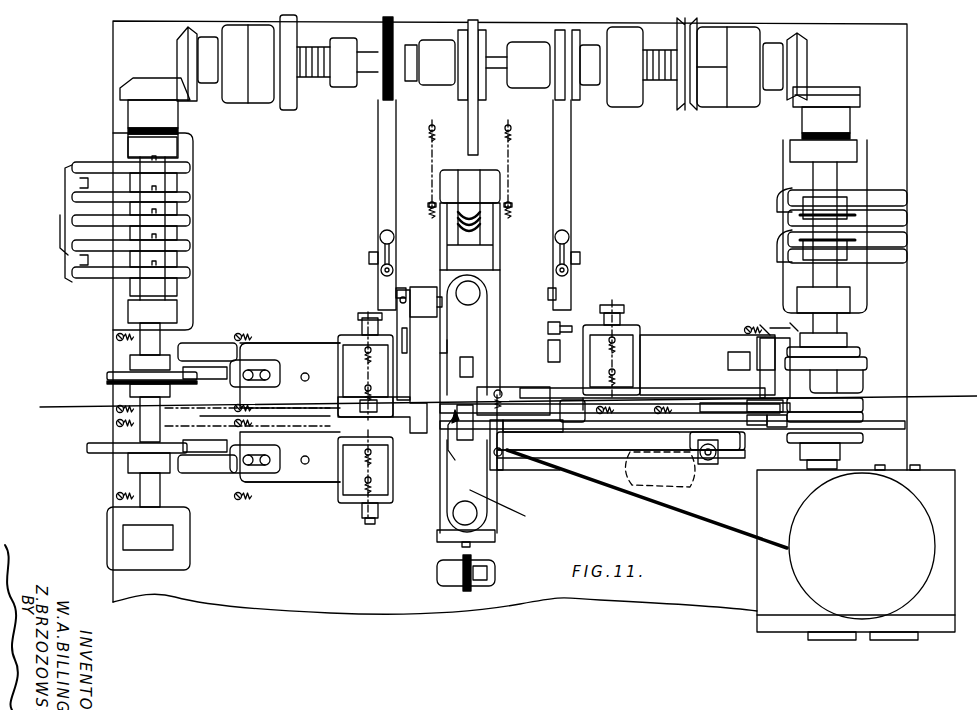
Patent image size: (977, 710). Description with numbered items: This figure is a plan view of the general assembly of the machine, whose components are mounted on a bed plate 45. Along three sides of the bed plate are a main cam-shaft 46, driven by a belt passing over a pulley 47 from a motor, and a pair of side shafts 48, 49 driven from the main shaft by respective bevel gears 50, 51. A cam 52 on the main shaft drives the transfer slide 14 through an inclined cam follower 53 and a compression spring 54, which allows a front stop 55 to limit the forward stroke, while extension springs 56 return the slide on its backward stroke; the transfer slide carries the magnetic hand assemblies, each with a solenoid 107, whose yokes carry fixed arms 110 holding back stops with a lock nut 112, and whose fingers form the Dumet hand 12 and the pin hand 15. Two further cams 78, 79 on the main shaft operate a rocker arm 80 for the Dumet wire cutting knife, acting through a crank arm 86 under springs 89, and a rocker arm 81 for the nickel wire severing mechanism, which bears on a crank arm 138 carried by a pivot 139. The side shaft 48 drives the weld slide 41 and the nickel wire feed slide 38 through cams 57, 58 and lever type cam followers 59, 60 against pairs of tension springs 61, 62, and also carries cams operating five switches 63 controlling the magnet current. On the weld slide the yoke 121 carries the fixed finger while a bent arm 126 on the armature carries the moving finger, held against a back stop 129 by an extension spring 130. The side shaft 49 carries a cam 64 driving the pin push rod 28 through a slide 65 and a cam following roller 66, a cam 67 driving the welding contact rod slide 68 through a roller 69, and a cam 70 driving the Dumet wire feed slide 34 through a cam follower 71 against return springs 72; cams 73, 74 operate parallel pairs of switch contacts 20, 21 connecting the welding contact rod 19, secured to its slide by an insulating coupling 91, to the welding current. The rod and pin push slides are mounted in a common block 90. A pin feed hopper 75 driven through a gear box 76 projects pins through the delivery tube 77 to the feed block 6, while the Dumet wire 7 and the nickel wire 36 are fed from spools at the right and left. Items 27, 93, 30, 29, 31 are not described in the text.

The bed plate 45 is at (510, 317).
The Dumet wire 7 is at (975, 396).
The bevel gear 50 is at (170, 72).
The main cam-shaft 46 is at (372, 70).
The cam 79 is at (393, 92).
The rocker arm 81 is at (380, 220).
The cam 52 is at (478, 108).
The cam 78 is at (565, 100).
The rocker arm 80 is at (572, 222).
The pulley 47 is at (688, 110).
The bevel gear 51 is at (813, 82).
The side shaft 49 is at (810, 277).
The switch contacts 20 is at (912, 192).
The switch contacts 21 is at (912, 233).
The cam 74 is at (798, 215).
The cam 73 is at (798, 240).
The return springs 72 is at (758, 325).
The cam 70 is at (865, 363).
The cam 67 is at (865, 406).
The cam 64 is at (907, 428).
The pin feed hopper 75 is at (856, 552).
The gear box 76 is at (925, 505).
The delivery tube 77 is at (634, 490).
The belt line 27 is at (642, 498).
The side shaft 48 is at (150, 342).
The switches 63 is at (63, 288).
The nickel wire 36 is at (88, 417).
The cam 58 is at (112, 381).
The cam 57 is at (98, 445).
The cam follower 59 is at (218, 495).
The cam follower 60 is at (240, 340).
The tension springs 62 is at (269, 384).
The tension springs 61 is at (252, 512).
The weld slide 41 is at (405, 490).
The nickel wire feed slide 38 is at (288, 342).
The yoke 121 is at (630, 340).
The extension spring 130 is at (625, 332).
The solenoid 107 is at (600, 318).
The back stop 129 is at (365, 520).
The bent arm 126 is at (405, 415).
The pivot 139 is at (410, 340).
The crank arm 138 is at (406, 350).
The extension springs 56 is at (512, 147).
The cam follower 53 is at (470, 186).
The compression spring 54 is at (482, 222).
The transfer slide 14 is at (498, 290).
The fixed arms 110 is at (525, 516).
The lock nut 112 is at (478, 518).
The Dumet hand 12 is at (462, 386).
The pin hand 15 is at (456, 425).
The front stop 55 is at (496, 575).
The springs 89 is at (548, 328).
The crank arm 86 is at (548, 352).
The feed block 6 is at (513, 428).
The rod 93 is at (680, 390).
The Dumet wire feed slide 34 is at (679, 372).
The cam follower 71 is at (751, 353).
The welding contact rod slide 68 is at (745, 405).
The insulating coupling 91 is at (575, 422).
The welding contact rod 19 is at (563, 440).
The pin push rod 28 is at (590, 468).
The common block 90 is at (620, 448).
The dashed cam 30 is at (660, 468).
The bolt 29 is at (708, 462).
The bar 31 is at (690, 478).
The cam following roller 69 is at (770, 412).
The slide 65 is at (740, 430).
The cam following roller 66 is at (776, 430).